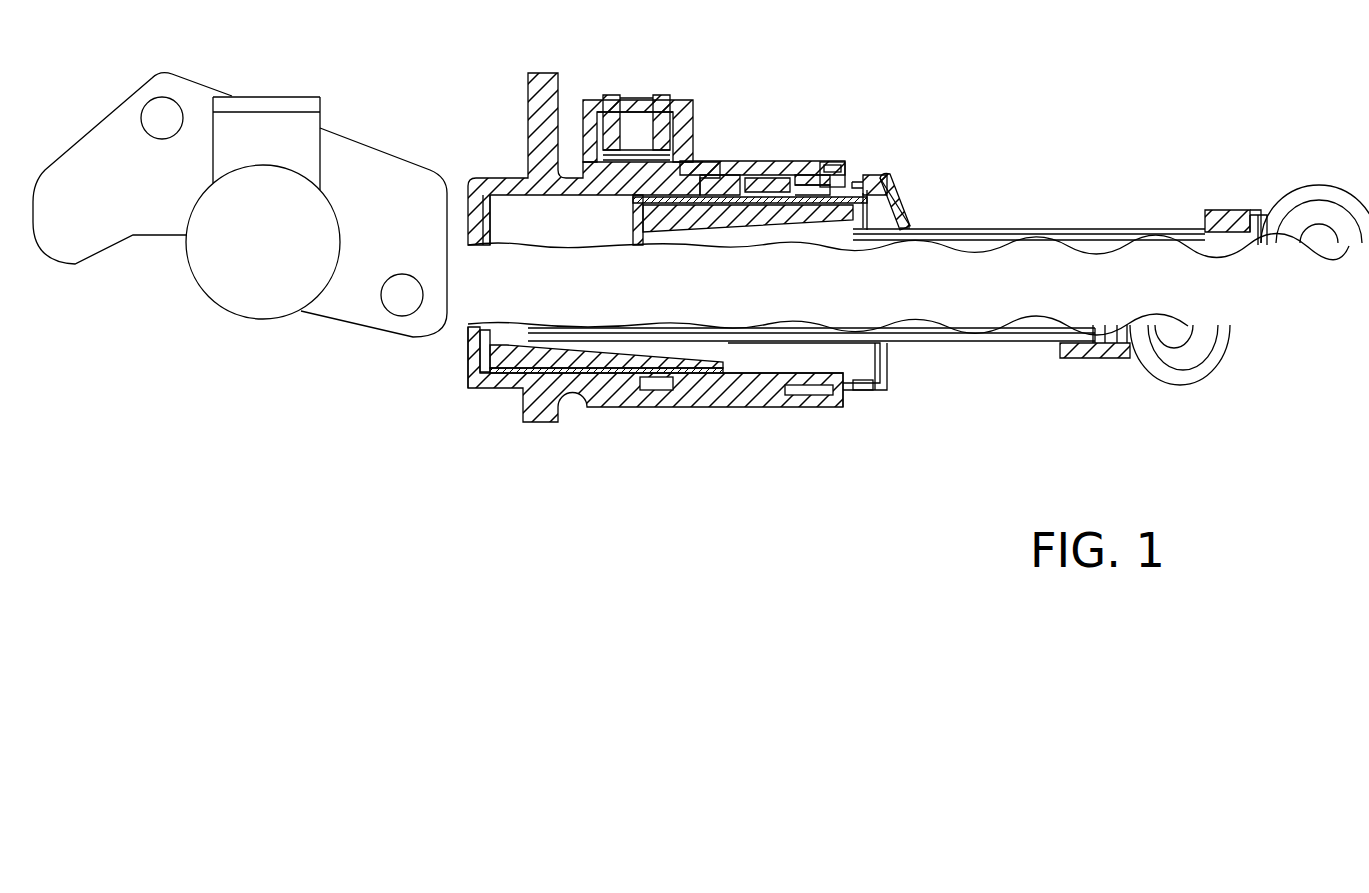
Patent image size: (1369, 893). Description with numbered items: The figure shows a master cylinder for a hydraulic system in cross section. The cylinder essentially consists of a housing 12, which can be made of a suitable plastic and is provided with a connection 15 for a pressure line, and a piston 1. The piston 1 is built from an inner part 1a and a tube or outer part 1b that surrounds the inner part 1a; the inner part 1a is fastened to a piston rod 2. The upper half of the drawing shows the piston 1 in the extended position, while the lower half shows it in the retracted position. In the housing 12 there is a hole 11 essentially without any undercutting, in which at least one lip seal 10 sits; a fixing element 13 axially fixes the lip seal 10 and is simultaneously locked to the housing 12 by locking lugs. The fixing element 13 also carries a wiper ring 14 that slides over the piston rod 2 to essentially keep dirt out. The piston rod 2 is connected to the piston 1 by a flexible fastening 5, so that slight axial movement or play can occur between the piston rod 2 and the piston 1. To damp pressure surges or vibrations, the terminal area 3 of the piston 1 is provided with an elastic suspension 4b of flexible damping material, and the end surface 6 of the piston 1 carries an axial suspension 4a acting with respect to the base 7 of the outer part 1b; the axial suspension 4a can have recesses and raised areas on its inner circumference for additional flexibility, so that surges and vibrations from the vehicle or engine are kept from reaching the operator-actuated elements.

The piston 1 is at (778, 197).
The inner part 1a is at (806, 172).
The outer part 1b is at (851, 181).
The piston rod 2 is at (1043, 205).
The terminal area 3 is at (900, 163).
The axial suspension 4a is at (624, 197).
The elastic suspension 4b is at (898, 205).
The flexible fastening 5 is at (510, 380).
The end surface 6 is at (470, 390).
The base 7 is at (474, 327).
The lip seal 10 is at (727, 183).
The hole 11 is at (768, 393).
The housing 12 is at (617, 390).
The fixing element 13 is at (846, 182).
The wiper ring 14 is at (906, 214).
The connection 15 is at (712, 172).